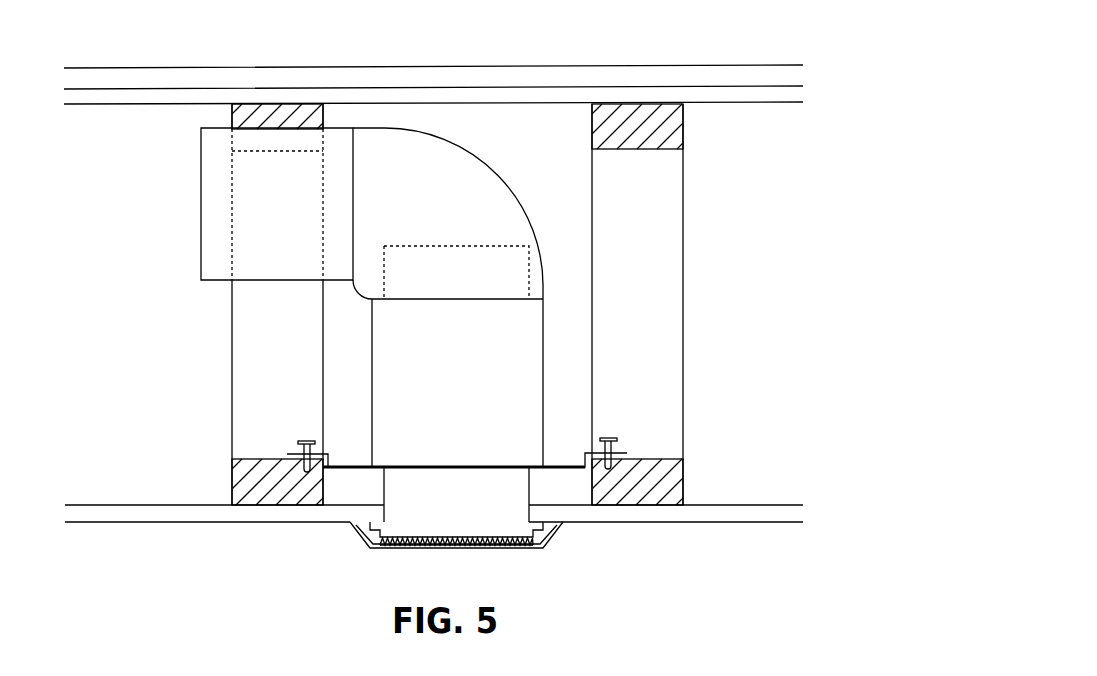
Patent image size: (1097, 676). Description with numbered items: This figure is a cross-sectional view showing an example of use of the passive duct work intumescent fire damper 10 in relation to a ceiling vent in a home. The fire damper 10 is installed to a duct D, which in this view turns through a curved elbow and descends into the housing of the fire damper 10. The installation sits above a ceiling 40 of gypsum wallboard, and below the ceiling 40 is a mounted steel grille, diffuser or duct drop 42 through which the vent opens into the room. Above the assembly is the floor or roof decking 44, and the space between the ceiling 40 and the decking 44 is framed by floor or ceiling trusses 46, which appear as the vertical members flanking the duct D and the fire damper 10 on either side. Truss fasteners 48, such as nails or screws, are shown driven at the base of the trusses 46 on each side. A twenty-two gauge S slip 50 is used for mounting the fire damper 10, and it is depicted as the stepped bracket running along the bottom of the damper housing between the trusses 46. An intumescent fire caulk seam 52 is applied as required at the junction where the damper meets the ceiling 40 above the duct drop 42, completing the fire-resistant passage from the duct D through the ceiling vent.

The fire damper 10 is at (457, 383).
The ceiling 40 is at (153, 514).
The duct drop 42 is at (407, 549).
The floor or roof decking 44 is at (214, 96).
The floor or ceiling trusses 46 is at (638, 221).
The truss fasteners 48 is at (306, 438).
The S slip 50 is at (558, 462).
The intumescent fire caulk seam 52 is at (530, 510).
The duct D is at (372, 213).